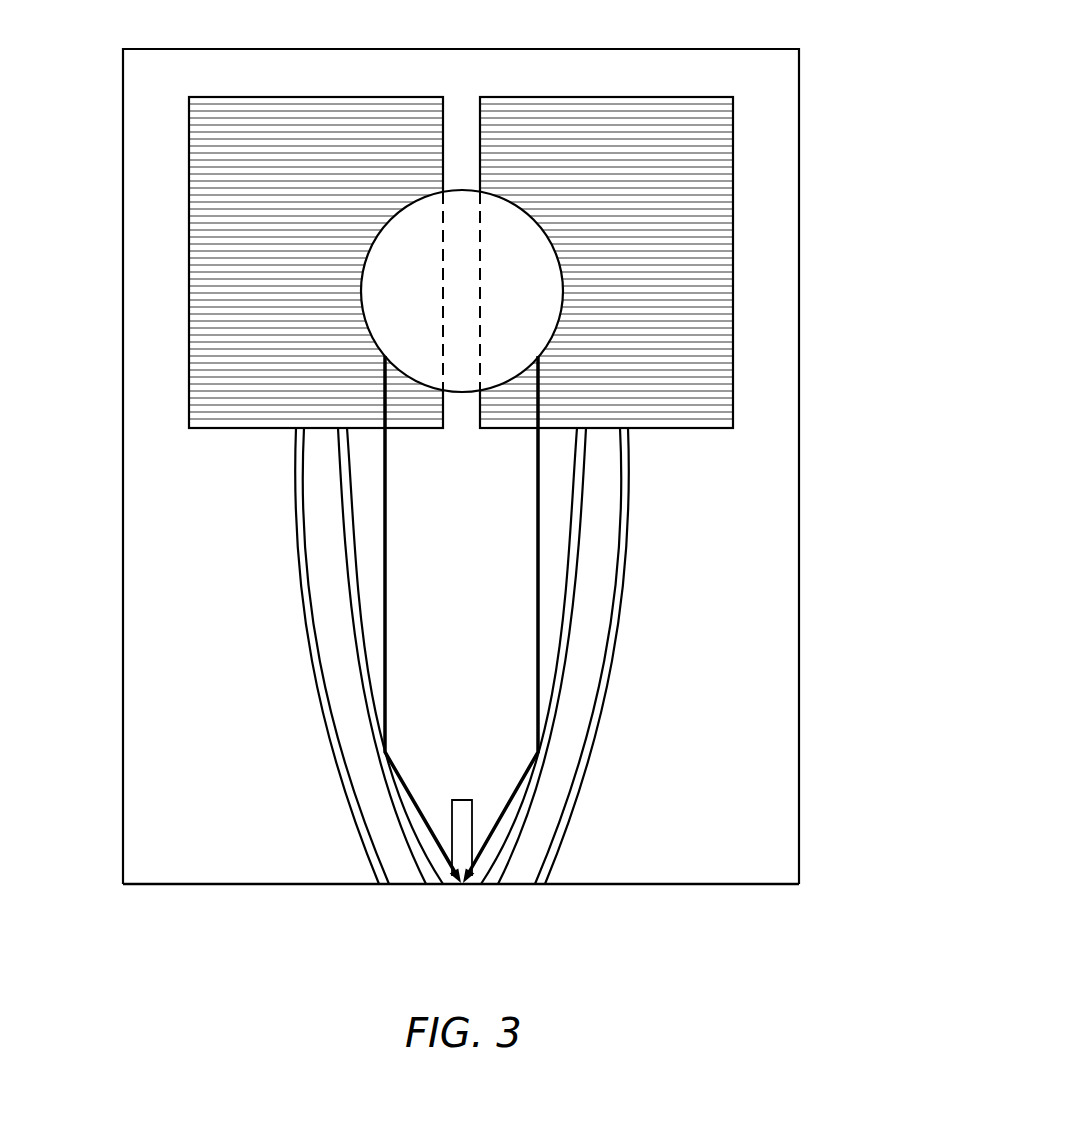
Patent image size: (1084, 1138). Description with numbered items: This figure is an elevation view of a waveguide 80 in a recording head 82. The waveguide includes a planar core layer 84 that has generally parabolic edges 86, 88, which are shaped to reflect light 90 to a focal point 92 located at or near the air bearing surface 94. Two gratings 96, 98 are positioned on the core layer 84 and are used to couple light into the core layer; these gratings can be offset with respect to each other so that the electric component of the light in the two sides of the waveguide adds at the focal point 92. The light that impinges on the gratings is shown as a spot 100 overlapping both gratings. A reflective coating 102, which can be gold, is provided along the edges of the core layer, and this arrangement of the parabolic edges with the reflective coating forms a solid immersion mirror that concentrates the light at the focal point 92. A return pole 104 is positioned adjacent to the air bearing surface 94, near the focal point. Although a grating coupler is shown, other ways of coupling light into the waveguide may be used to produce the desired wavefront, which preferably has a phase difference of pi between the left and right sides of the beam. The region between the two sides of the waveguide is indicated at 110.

The waveguide 80 is at (862, 74).
The recording head 82 is at (845, 187).
The planar core layer 84 is at (410, 687).
The parabolic edge 86 is at (355, 597).
The parabolic edge 88 is at (568, 595).
The light 90 is at (538, 498).
The focal point 92 is at (462, 885).
The air bearing surface 94 is at (663, 885).
The grating 96 is at (207, 249).
The grating 98 is at (712, 240).
The spot 100 is at (560, 320).
The reflective coating 102 is at (553, 702).
The return pole 104 is at (468, 813).
The outer lead wires 110 is at (500, 645).